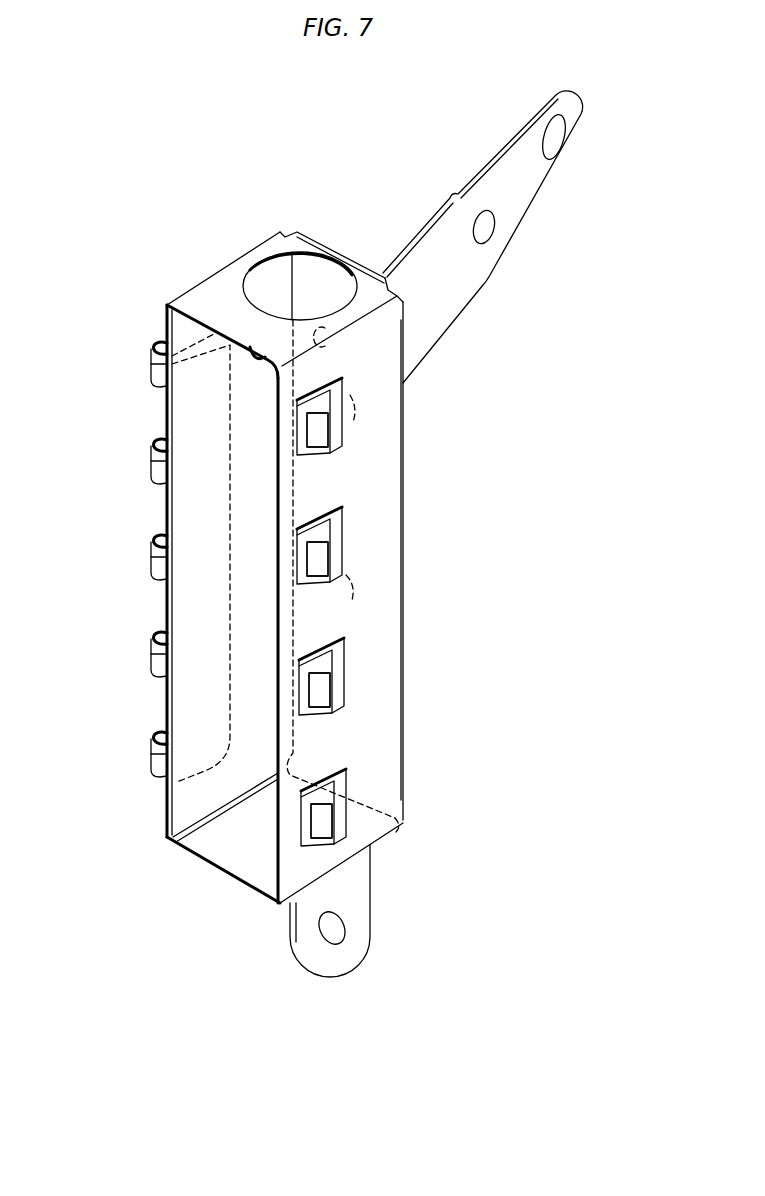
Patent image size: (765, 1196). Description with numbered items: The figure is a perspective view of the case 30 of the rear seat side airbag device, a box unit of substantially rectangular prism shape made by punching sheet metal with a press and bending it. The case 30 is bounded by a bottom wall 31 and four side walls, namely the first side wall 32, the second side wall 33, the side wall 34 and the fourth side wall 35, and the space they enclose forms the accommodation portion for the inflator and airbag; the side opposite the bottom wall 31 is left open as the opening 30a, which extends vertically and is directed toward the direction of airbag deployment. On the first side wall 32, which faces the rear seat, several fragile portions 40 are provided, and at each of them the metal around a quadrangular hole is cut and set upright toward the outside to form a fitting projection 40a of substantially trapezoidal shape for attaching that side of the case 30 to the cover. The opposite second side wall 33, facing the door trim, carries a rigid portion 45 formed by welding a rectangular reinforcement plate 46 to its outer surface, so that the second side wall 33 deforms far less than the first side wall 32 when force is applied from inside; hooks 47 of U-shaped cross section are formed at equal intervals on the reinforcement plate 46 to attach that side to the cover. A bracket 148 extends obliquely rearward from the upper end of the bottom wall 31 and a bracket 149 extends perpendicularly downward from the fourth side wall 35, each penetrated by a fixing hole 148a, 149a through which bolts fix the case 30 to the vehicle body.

The case 30 is at (282, 194).
The opening 30a is at (250, 347).
The bottom wall 31 is at (403, 483).
The first side wall 32 is at (390, 577).
The second side wall 33 is at (163, 490).
The side wall 34 is at (188, 300).
The fourth side wall 35 is at (220, 873).
The fragile portion 40 is at (374, 410).
The fitting projection 40a is at (338, 445).
The rigid portion 45 is at (129, 558).
The reinforcement plate 46 is at (160, 514).
The hook 47 is at (153, 460).
The bracket 148 is at (540, 183).
The fixing hole 148a is at (553, 132).
The bracket 149 is at (358, 927).
The fixing hole 149a is at (330, 940).